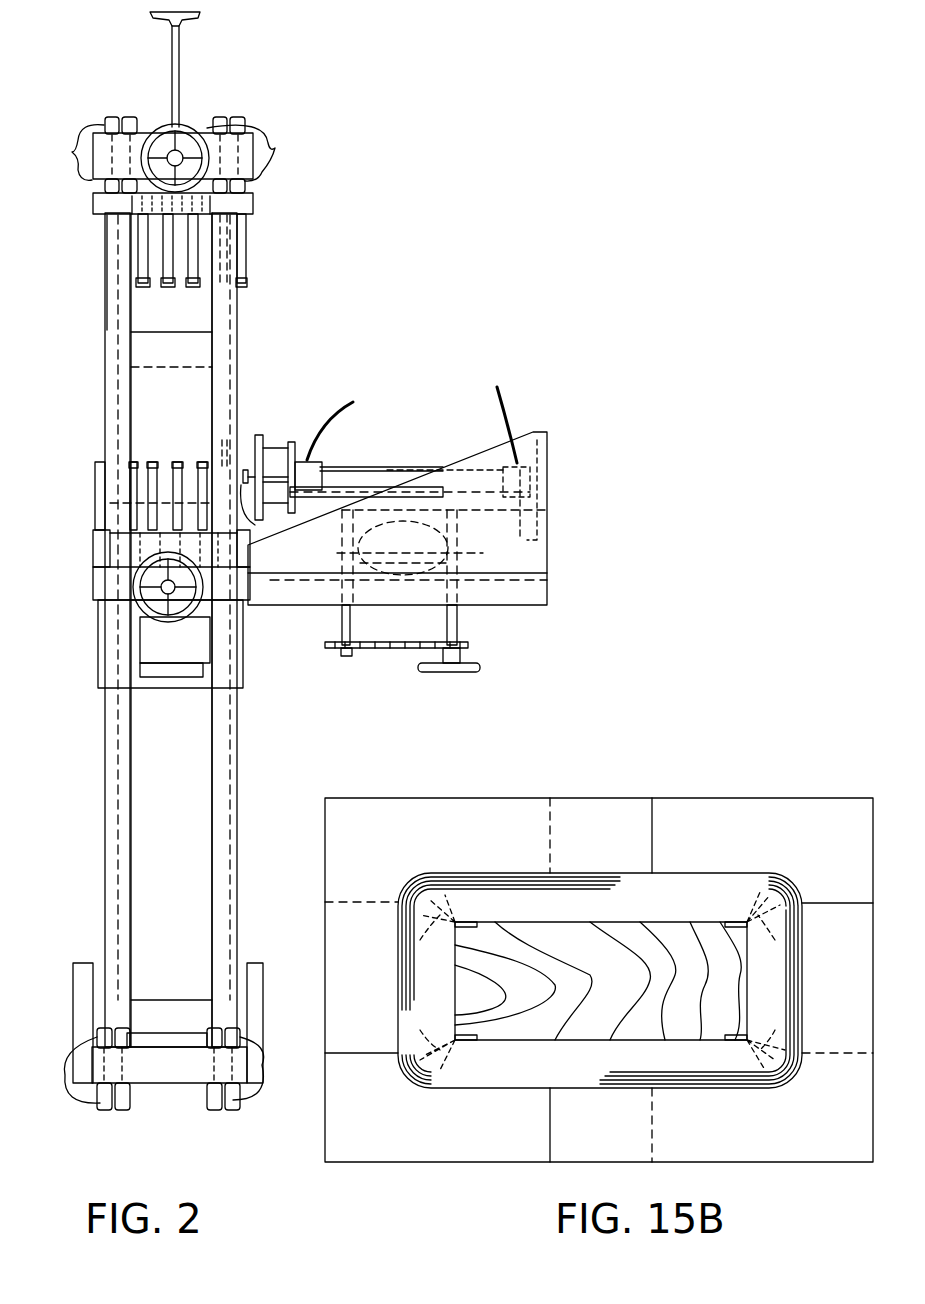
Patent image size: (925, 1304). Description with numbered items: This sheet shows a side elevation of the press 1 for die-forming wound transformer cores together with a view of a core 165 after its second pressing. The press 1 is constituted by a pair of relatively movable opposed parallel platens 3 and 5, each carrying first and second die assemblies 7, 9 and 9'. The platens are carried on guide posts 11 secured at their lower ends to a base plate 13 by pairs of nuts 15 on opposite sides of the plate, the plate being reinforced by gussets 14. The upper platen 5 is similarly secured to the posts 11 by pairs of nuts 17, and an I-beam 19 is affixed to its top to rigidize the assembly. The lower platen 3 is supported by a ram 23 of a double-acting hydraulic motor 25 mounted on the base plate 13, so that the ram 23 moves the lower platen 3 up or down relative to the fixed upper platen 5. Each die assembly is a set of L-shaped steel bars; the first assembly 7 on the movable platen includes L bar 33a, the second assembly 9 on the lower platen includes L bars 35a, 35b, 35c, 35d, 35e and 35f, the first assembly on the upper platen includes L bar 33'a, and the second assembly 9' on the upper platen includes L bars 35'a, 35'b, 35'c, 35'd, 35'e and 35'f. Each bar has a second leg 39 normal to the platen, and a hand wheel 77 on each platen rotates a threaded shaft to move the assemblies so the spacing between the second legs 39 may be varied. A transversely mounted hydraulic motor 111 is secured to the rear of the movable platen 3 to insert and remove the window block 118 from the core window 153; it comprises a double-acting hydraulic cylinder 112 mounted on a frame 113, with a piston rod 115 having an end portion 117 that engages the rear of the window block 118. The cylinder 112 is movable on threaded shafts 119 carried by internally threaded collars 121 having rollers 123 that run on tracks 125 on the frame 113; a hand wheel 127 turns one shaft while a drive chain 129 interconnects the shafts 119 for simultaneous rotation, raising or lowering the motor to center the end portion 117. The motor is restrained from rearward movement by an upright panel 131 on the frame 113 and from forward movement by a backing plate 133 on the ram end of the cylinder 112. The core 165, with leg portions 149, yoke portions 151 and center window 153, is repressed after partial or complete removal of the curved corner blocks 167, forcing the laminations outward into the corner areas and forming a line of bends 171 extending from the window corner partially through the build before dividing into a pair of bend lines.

In FIG. 2, the press 1 is at (424, 244).
In FIG. 2, the lower platen 3 is at (98, 590).
In FIG. 2, the upper platen 5 is at (205, 140).
In FIG. 2, the first die assembly 7 is at (282, 580).
In FIG. 2, the second die assembly 9 is at (58, 509).
In FIG. 2, the second die assembly 9' is at (77, 251).
In FIG. 2, the guide posts 11 is at (108, 750).
In FIG. 2, the base plate 13 is at (182, 1080).
In FIG. 2, the gussets 14 is at (78, 985).
In FIG. 2, the nuts 15 is at (163, 1069).
In FIG. 2, the nuts 17 is at (170, 155).
In FIG. 2, the I-beam 19 is at (179, 72).
In FIG. 2, the ram 23 is at (185, 648).
In FIG. 2, the hydraulic motor 25 is at (198, 836).
In FIG. 15B, the L bar 33a is at (395, 1148).
In FIG. 15B, the L bar 33'a is at (599, 963).
In FIG. 2, the L bar 35a is at (100, 462).
In FIG. 15B, the L bar 35a is at (755, 1150).
In FIG. 2, the L bar 35b is at (136, 462).
In FIG. 2, the L bar 35c is at (155, 464).
In FIG. 2, the L bar 35d is at (180, 462).
In FIG. 2, the L bar 35e is at (204, 462).
In FIG. 2, the L bar 35f is at (228, 460).
In FIG. 2, the L bar 35'a is at (76, 275).
In FIG. 15B, the L bar 35'a is at (762, 836).
In FIG. 2, the L bar 35'b is at (160, 264).
In FIG. 2, the L bar 35'c is at (186, 272).
In FIG. 2, the L bar 35'd is at (246, 264).
In FIG. 2, the L bar 35'e is at (268, 253).
In FIG. 2, the L bar 35'f is at (279, 250).
In FIG. 2, the second leg 39 is at (120, 286).
In FIG. 2, the hand wheel 77 is at (163, 130).
In FIG. 2, the hydraulic motor 111 is at (426, 402).
In FIG. 2, the hydraulic cylinder 112 is at (335, 467).
In FIG. 2, the frame 113 is at (497, 452).
In FIG. 2, the piston rod 115 is at (302, 462).
In FIG. 2, the end portion 117 is at (266, 503).
In FIG. 2, the threaded shafts 119 is at (447, 625).
In FIG. 2, the collars 121 is at (372, 533).
In FIG. 2, the rollers 123 is at (360, 570).
In FIG. 2, the tracks 125 is at (283, 605).
In FIG. 2, the hand wheel 127 is at (462, 672).
In FIG. 2, the drive chain 129 is at (385, 650).
In FIG. 2, the upright panel 131 is at (548, 447).
In FIG. 2, the backing plate 133 is at (275, 448).
In FIG. 15B, the window block 118 is at (577, 996).
In FIG. 15B, the leg portions 149 is at (608, 880).
In FIG. 15B, the yoke portions 151 is at (420, 990).
In FIG. 15B, the center window 153 is at (590, 1032).
In FIG. 15B, the core 165 is at (560, 916).
In FIG. 15B, the curved corner block 167 is at (400, 873).
In FIG. 15B, the line of bends 171 is at (460, 1062).